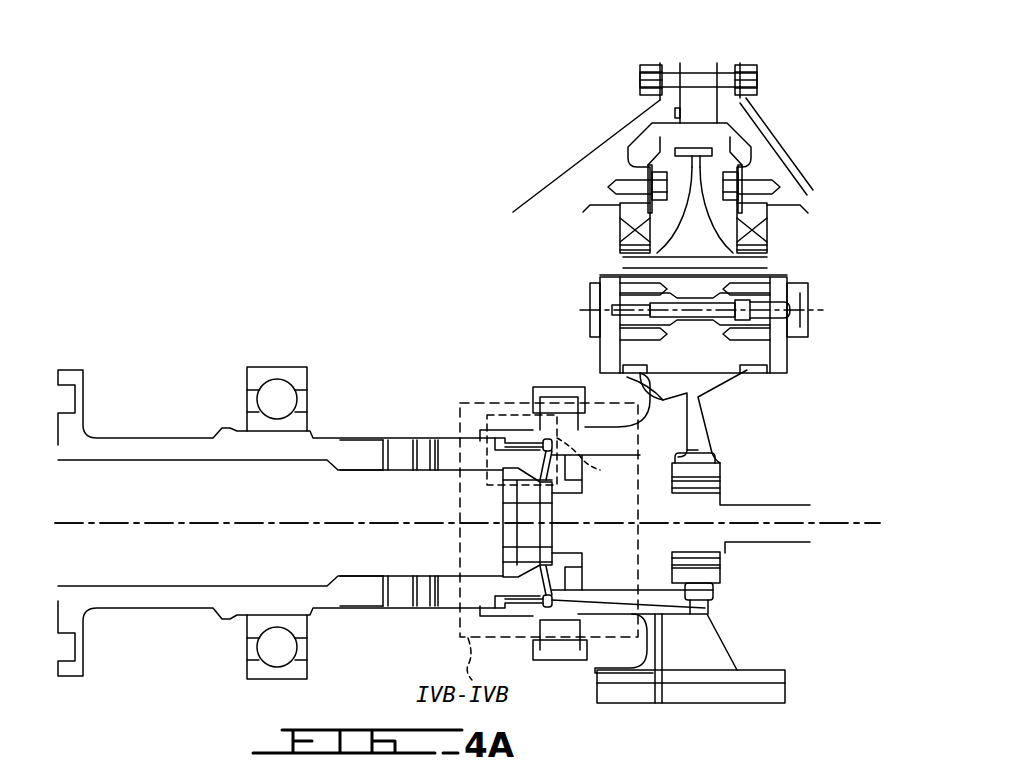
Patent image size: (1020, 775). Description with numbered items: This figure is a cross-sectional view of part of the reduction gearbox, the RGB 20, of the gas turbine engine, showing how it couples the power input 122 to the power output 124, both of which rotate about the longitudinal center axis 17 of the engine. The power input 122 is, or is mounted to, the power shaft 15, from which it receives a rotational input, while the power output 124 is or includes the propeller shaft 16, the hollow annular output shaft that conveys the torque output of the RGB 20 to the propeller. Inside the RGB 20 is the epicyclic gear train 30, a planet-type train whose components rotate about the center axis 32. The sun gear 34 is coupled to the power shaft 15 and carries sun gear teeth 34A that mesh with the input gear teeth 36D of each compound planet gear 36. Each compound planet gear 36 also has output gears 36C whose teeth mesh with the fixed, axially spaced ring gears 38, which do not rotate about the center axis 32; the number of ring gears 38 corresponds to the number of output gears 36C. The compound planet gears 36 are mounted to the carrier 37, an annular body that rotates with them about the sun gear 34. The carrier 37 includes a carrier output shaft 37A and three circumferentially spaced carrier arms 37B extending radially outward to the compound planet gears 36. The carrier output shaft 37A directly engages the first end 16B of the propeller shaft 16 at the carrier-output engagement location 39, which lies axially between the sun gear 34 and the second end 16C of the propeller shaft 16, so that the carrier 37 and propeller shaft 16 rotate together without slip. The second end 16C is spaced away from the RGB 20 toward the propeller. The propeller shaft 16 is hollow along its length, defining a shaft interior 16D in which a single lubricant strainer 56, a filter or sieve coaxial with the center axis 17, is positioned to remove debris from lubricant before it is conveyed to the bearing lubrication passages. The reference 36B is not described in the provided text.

The reduction gearbox 20 is at (822, 78).
The epicyclic gear train 30 is at (795, 188).
The ring gears 38 is at (600, 229).
The compound planet gear 36 is at (729, 355).
The carrier arms 37B is at (663, 358).
The carrier output shaft 37A is at (505, 436).
The carrier 37 is at (612, 386).
The output gears 36C is at (762, 367).
The shaft web 36B is at (700, 397).
The input gear teeth 36D is at (712, 456).
The sun gear teeth 34A is at (722, 468).
The sun gear 34 is at (738, 482).
The carrier-output engagement location 39 is at (592, 462).
The first end of the propeller shaft 16B is at (594, 490).
The center axis 32 is at (847, 522).
The power input 122 is at (707, 598).
The power shaft 15 is at (808, 543).
The second end of the propeller shaft 16C is at (68, 360).
The propeller shaft 16 is at (263, 365).
The center axis of the engine 17 is at (77, 523).
The shaft interior 16D is at (392, 563).
The lubricant strainer 56 is at (495, 579).
The power output 124 is at (112, 625).